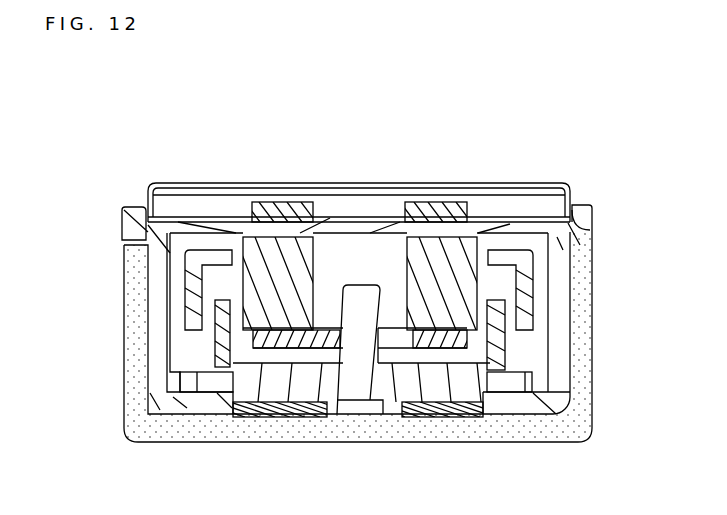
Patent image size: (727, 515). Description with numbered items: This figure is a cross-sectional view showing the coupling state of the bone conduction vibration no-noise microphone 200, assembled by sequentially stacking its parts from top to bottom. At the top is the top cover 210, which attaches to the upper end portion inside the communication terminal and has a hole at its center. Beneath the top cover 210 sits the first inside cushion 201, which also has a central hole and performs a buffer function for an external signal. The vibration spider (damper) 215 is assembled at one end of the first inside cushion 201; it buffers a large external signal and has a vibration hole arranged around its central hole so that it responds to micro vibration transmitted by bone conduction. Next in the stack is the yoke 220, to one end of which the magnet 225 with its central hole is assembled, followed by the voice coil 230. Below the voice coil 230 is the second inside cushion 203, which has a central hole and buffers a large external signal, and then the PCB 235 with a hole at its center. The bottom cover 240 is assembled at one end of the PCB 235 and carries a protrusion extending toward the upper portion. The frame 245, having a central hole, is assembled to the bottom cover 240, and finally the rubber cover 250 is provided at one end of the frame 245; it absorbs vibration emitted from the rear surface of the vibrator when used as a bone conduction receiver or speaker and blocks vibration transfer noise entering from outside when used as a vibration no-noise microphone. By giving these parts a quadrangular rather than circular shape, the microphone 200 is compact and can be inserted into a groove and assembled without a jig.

The bone conduction vibration no-noise microphone 200 is at (384, 128).
The first inside cushion 201 is at (283, 195).
The second inside cushion 203 is at (285, 418).
The top cover 210 is at (208, 185).
The vibration spider (damper) 215 is at (522, 190).
The yoke 220 is at (167, 288).
The magnet 225 is at (250, 330).
The voice coil 230 is at (503, 358).
The PCB 235 is at (481, 420).
The bottom cover 240 is at (548, 386).
The frame 245 is at (130, 230).
The rubber cover 250 is at (400, 432).